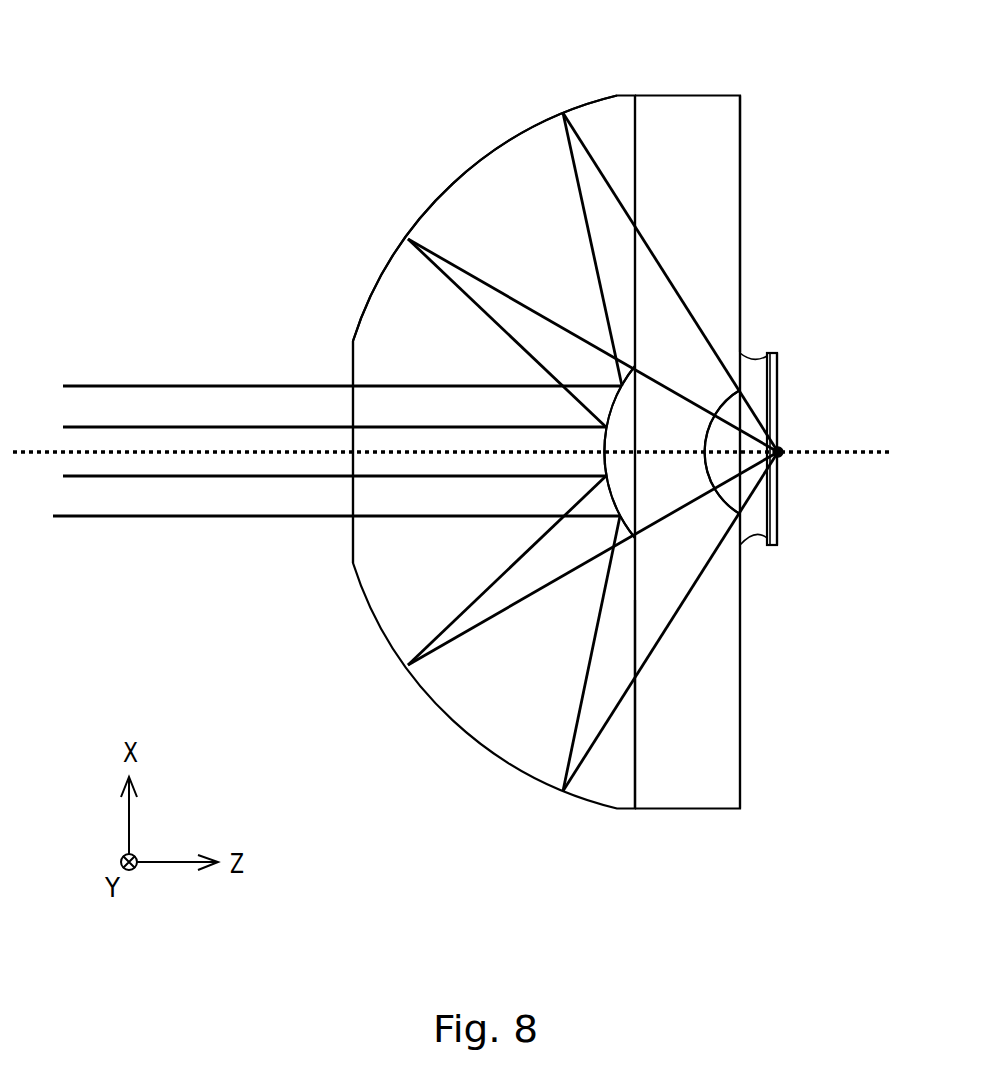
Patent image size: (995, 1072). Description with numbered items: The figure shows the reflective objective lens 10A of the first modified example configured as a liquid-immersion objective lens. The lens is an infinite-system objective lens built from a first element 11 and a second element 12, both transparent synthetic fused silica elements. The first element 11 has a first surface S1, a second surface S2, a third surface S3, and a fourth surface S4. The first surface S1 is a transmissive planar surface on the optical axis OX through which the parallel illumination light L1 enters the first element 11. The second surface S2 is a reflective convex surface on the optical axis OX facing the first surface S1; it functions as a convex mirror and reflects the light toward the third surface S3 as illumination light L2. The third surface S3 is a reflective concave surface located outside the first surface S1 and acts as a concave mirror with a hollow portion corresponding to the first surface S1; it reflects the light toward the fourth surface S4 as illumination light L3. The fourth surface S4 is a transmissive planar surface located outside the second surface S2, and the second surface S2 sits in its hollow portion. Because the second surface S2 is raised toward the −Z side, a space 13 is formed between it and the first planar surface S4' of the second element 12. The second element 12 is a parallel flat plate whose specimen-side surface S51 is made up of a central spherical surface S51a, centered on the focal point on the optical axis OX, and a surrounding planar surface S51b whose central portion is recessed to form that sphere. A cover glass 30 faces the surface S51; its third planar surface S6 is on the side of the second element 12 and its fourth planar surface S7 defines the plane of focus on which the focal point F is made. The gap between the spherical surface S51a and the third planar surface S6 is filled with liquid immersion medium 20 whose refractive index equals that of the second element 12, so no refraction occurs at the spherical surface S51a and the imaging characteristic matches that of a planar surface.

The objective lens 10A is at (87, 53).
The first element 11 is at (395, 628).
The second element 12 is at (735, 767).
The space 13 is at (627, 468).
The liquid immersion medium 20 is at (753, 362).
The cover glass 30 is at (778, 518).
The first surface S1 is at (352, 408).
The second surface S2 is at (606, 438).
The third surface S3 is at (467, 170).
The fourth surface S4 is at (662, 426).
The first planar surface S4' is at (607, 728).
The surface S51 is at (742, 710).
The spherical surface S51a is at (720, 493).
The planar surface S51b is at (740, 152).
The third planar surface S6 is at (757, 535).
The fourth planar surface S7 is at (778, 388).
The focal point F is at (783, 452).
The optical axis OX is at (23, 455).
The illumination light L1 is at (127, 518).
The illumination light L2 is at (572, 737).
The illumination light L3 is at (662, 638).